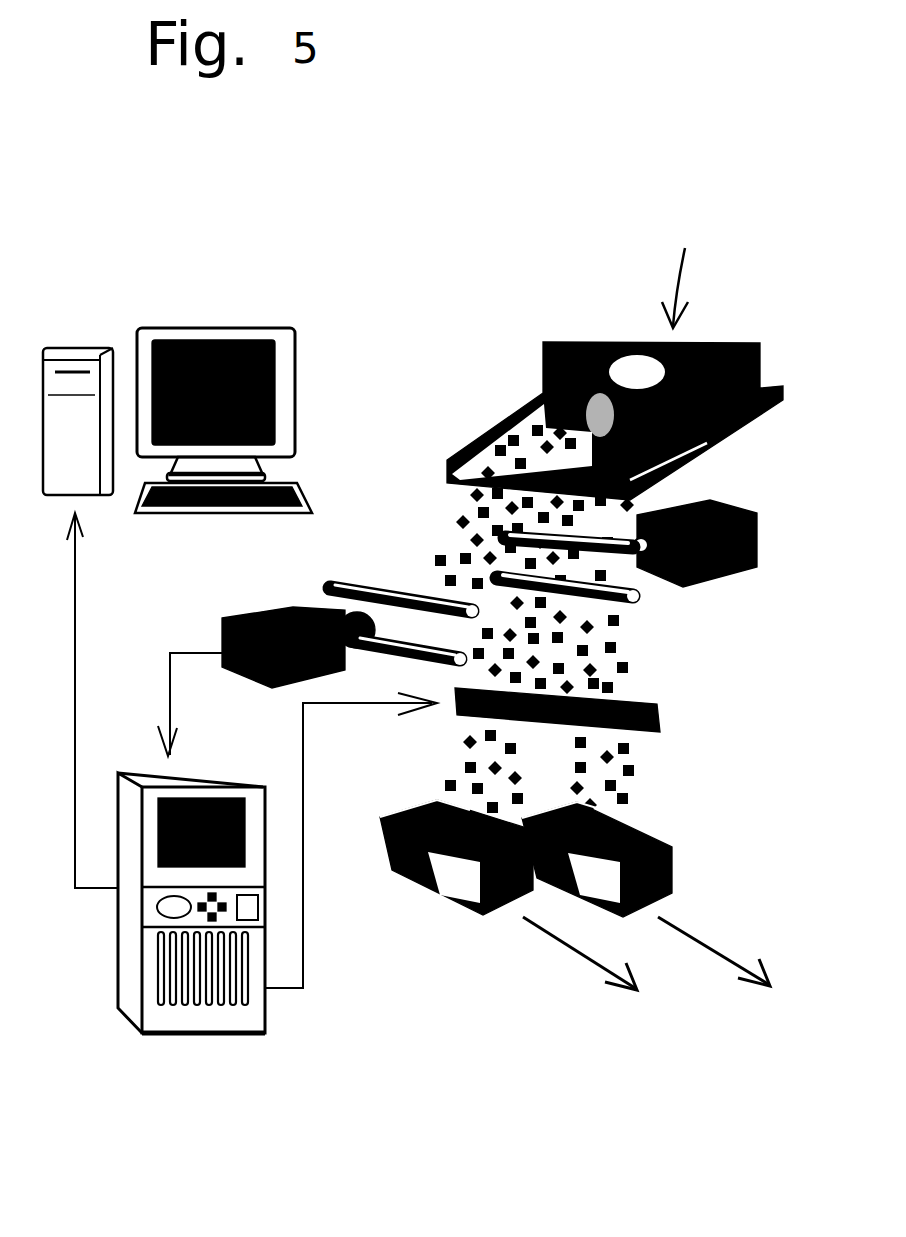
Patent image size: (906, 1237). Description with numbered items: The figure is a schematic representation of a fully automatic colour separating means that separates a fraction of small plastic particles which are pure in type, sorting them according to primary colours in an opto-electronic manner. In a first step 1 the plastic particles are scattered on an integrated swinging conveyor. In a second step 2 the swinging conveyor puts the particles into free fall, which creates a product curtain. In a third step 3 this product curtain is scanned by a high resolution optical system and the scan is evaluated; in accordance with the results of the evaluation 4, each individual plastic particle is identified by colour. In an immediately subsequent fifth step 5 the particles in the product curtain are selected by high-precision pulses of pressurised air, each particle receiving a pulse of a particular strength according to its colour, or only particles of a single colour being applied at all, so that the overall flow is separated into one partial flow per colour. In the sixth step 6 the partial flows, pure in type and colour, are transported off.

The first step (scattering on swinging conveyor) 1 is at (615, 374).
The second step (free fall / product curtain) 2 is at (512, 626).
The third step (optical scanning) 3 is at (481, 628).
The fourth step (colour identification / evaluation) 4 is at (232, 680).
The fifth step (pressurised-air selection) 5 is at (507, 728).
The sixth step (transporting off partial flows) 6 is at (593, 895).